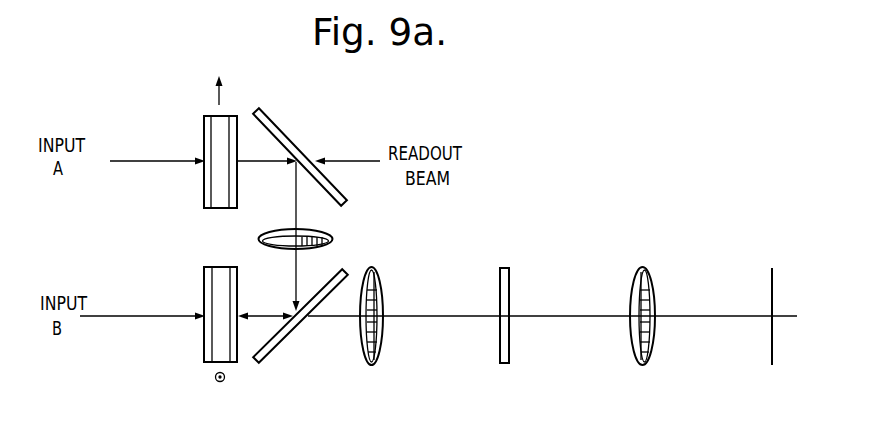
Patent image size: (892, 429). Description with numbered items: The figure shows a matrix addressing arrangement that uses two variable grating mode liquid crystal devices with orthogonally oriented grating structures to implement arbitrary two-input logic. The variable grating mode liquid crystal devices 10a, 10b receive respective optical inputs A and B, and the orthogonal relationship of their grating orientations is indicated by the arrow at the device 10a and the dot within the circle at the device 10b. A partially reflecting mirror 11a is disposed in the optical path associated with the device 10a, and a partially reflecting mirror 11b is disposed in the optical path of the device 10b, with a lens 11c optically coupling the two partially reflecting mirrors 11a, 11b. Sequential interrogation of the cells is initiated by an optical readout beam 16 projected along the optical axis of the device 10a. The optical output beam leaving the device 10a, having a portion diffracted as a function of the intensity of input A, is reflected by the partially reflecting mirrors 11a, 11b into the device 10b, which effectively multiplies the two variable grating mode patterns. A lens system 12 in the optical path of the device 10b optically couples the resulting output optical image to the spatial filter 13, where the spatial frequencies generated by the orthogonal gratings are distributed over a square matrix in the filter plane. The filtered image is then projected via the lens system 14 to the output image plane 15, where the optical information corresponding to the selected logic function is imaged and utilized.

The variable grating mode liquid crystal device 10a is at (204, 128).
The variable grating mode liquid crystal device 10b is at (205, 359).
The partially reflecting mirror 11a is at (276, 122).
The partially reflecting mirror 11b is at (266, 360).
The lens 11c is at (333, 238).
The lens system 12 is at (380, 284).
The spatial filter 13 is at (510, 283).
The lens system 14 is at (652, 283).
The output image plane 15 is at (771, 352).
The readout beam 16 is at (357, 160).